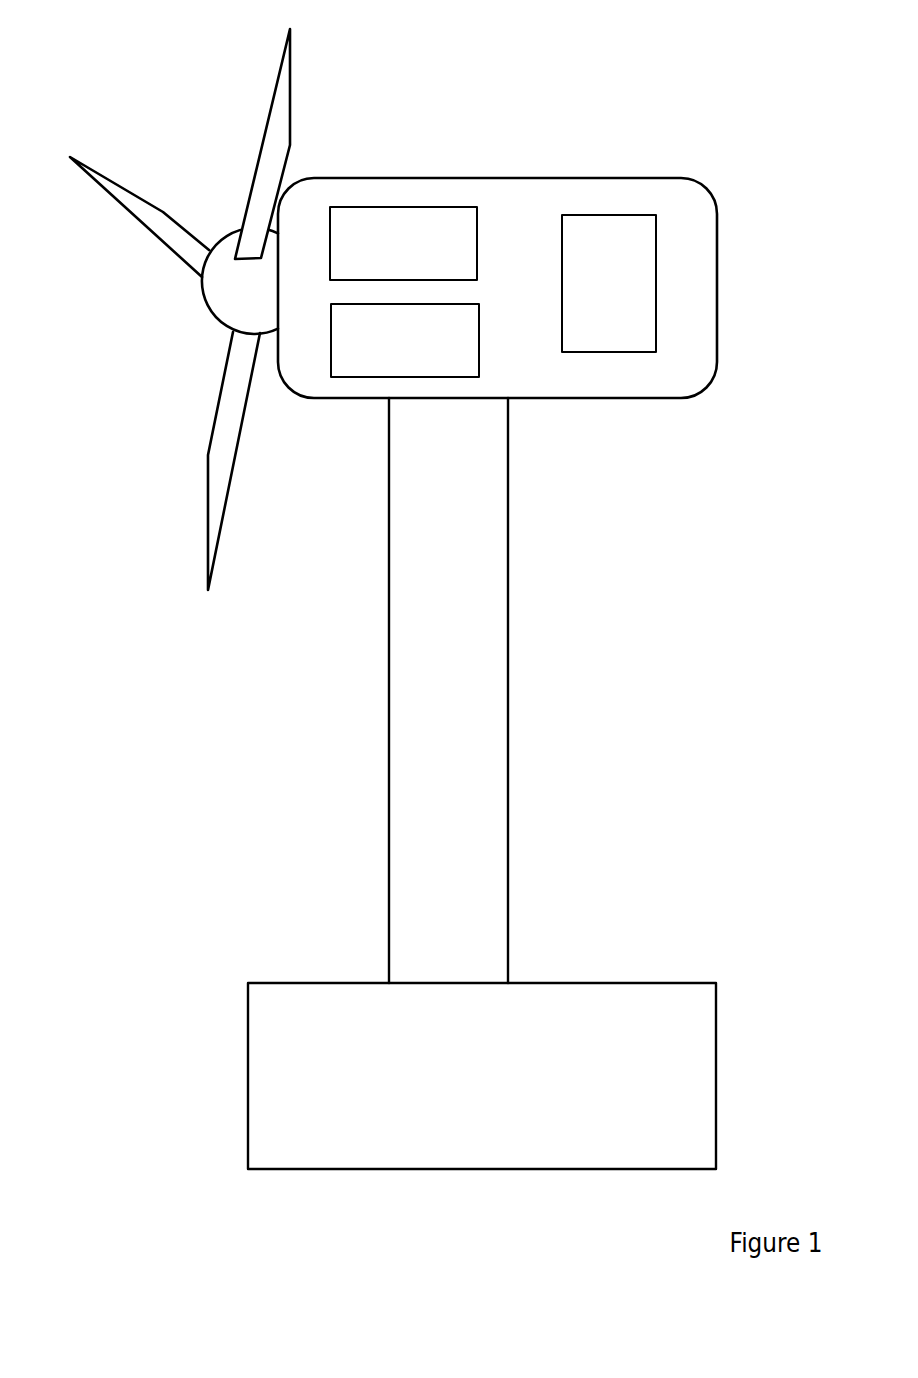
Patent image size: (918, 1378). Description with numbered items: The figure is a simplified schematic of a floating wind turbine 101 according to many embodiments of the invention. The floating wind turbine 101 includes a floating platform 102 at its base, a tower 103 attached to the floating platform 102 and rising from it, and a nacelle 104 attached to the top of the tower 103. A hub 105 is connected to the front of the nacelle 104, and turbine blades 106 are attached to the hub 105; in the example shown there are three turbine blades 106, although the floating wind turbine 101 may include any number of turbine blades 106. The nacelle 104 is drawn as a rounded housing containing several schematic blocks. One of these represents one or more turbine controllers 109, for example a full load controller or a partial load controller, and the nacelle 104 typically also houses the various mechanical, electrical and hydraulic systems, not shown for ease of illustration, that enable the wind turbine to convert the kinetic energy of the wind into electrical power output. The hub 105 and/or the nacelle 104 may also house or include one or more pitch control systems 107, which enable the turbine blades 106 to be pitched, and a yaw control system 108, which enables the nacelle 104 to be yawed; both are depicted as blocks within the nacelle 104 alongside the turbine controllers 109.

The floating wind turbine 101 is at (719, 130).
The floating platform 102 is at (482, 1076).
The tower 103 is at (448, 690).
The nacelle 104 is at (600, 398).
The hub 105 is at (208, 303).
The turbine blades 106 is at (128, 185).
The pitch control systems 107 is at (403, 243).
The yaw control system 108 is at (405, 340).
The turbine controllers 109 is at (609, 283).